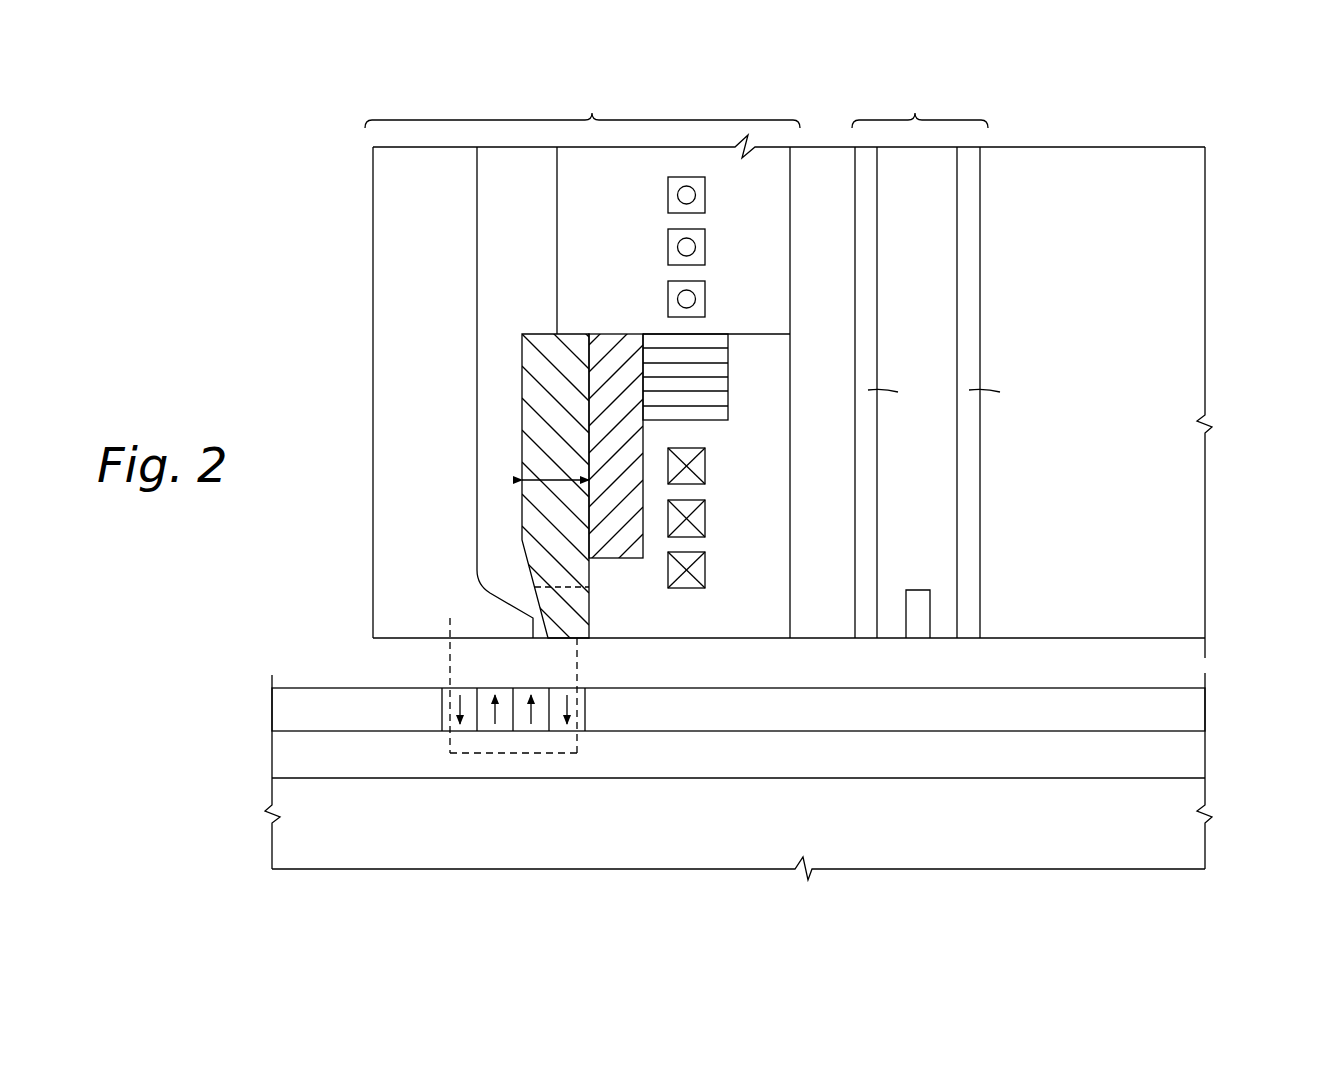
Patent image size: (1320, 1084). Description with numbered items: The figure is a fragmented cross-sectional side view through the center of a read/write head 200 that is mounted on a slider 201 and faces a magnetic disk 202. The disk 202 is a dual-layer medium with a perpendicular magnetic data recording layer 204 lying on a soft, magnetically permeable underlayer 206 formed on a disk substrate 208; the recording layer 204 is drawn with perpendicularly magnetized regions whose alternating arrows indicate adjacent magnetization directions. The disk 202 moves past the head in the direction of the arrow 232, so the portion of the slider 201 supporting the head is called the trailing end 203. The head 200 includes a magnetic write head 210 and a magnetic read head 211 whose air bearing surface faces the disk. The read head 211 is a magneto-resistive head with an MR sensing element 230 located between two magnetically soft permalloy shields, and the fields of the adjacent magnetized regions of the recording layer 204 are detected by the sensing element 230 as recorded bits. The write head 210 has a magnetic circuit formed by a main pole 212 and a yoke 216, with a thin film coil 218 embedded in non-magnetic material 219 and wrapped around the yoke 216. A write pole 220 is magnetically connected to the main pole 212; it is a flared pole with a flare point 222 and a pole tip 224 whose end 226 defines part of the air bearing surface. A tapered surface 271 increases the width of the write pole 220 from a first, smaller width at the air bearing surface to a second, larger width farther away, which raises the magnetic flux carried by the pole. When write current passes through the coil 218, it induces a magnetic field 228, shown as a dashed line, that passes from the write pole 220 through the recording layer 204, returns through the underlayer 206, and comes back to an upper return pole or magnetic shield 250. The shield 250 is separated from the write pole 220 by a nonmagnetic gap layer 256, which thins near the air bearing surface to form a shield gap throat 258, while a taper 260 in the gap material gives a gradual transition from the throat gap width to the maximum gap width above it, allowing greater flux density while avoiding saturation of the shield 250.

The read/write head 200 is at (232, 139).
The slider 201 is at (1205, 250).
The magnetic disk 202 is at (792, 776).
The trailing end 203 is at (342, 366).
The perpendicular magnetic data recording layer 204 is at (1197, 712).
The magnetically permeable underlayer 206 is at (1197, 756).
The disk substrate 208 is at (1197, 841).
The magnetic write head 210 is at (582, 360).
The magnetic read head 211 is at (941, 360).
The main pole 212 is at (608, 343).
The yoke 216 is at (713, 328).
The thin film coil 218 is at (713, 167).
The non-magnetic material 219 is at (640, 232).
The write pole 220 is at (537, 347).
The flare point 222 is at (567, 583).
The pole tip 224 is at (582, 605).
The end of the write pole 226 is at (582, 638).
The magnetic field 228 is at (577, 657).
The MR sensing element 230 is at (913, 590).
The arrow indicating disk motion direction 232 is at (195, 755).
The upper return pole or magnetic shield 250 is at (378, 244).
The nonmagnetic gap layer 256 is at (477, 376).
The shield gap throat 258 is at (533, 620).
The taper 260 is at (478, 585).
The tapered surface 271 is at (535, 587).